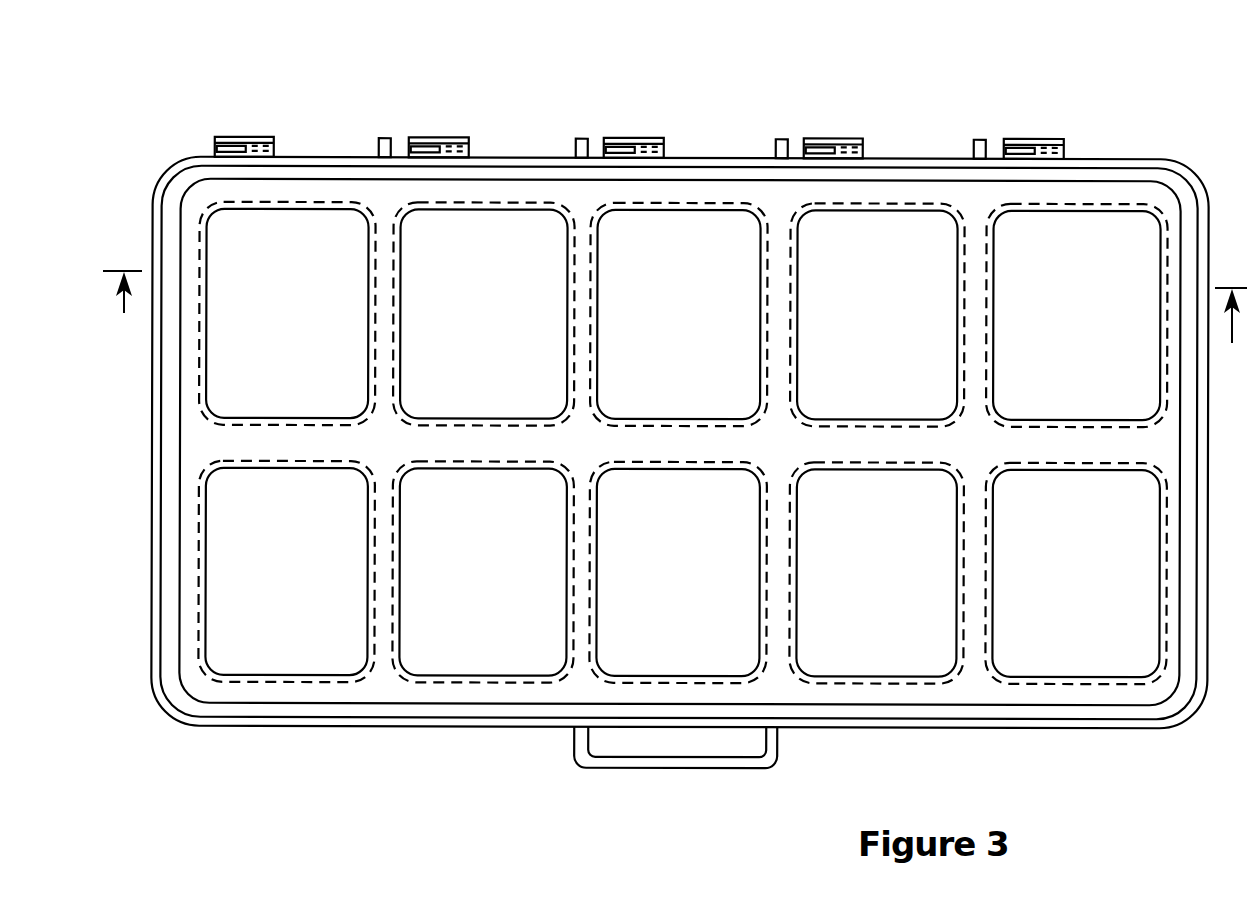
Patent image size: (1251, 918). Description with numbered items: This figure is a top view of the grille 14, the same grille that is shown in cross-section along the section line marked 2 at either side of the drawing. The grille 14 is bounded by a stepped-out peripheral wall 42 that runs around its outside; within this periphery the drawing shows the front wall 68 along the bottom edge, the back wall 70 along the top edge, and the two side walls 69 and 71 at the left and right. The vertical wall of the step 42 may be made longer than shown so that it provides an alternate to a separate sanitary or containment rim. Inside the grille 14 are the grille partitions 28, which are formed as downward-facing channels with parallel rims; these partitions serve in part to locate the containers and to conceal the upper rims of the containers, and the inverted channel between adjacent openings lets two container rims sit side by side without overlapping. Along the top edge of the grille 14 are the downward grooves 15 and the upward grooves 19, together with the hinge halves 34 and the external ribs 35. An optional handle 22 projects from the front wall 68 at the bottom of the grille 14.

The grille 14 is at (679, 418).
The stepped-out peripheral wall 42 is at (151, 233).
The side wall 69 is at (169, 207).
The back wall 70 is at (1090, 178).
The side wall 71 is at (1188, 212).
The front wall 68 is at (990, 713).
The grille partitions 28 is at (645, 441).
The upward grooves 19 is at (409, 139).
The downward grooves 15 is at (468, 151).
The hinge halves 34 is at (631, 140).
The external ribs 35 is at (973, 148).
The handle 22 is at (772, 757).
The section line 2- 2 is at (675, 319).